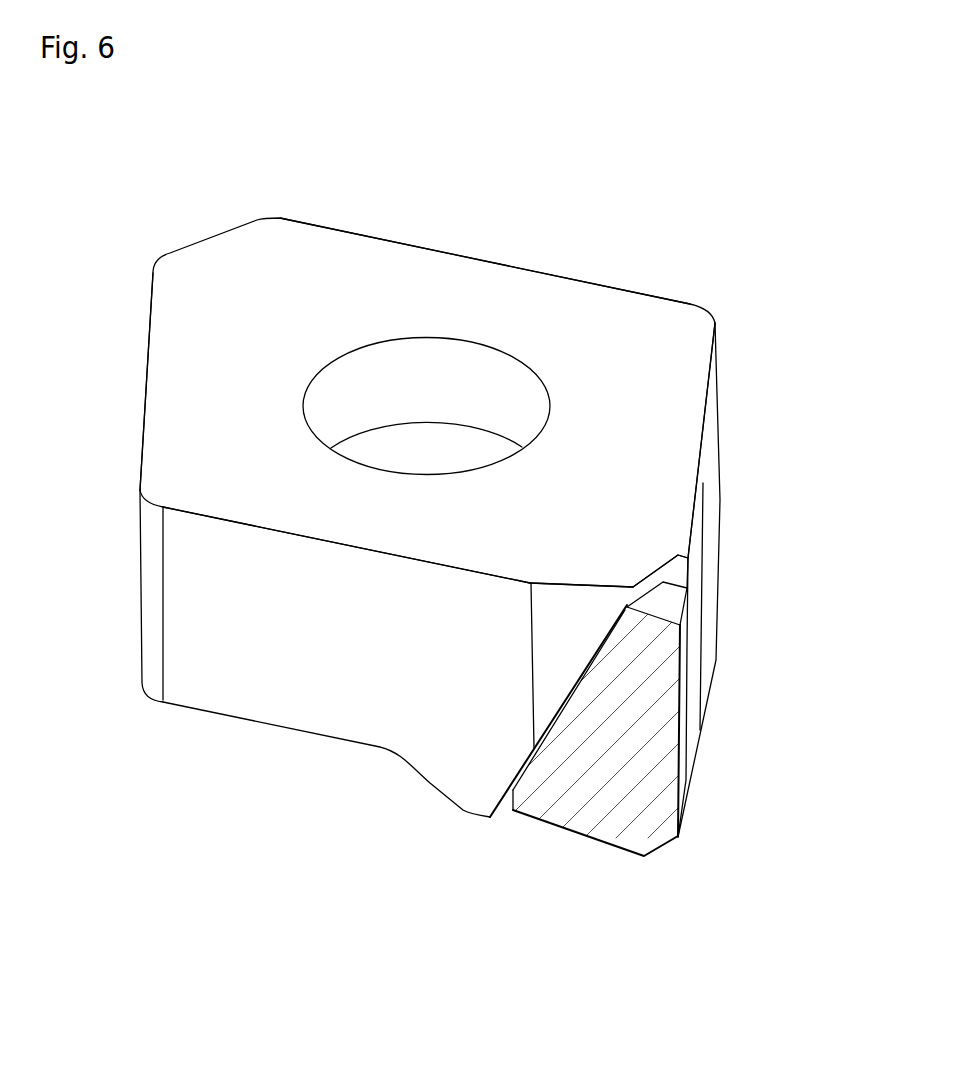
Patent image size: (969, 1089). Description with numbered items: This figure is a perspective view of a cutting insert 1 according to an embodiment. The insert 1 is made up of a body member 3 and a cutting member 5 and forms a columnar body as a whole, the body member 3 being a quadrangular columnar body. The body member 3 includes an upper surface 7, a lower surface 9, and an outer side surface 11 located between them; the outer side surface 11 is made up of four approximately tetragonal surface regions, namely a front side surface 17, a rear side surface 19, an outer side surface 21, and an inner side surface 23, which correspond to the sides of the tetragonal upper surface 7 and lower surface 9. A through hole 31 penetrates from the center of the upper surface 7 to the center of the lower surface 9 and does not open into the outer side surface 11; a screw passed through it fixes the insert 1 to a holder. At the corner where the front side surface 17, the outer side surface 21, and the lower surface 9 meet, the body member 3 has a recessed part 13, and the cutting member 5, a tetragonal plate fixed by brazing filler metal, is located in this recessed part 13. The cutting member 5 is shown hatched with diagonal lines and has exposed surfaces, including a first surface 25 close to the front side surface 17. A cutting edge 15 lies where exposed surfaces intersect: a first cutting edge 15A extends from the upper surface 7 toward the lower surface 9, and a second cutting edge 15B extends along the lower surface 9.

The insert 1 is at (219, 167).
The body member 3 is at (227, 642).
The cutting member 5 is at (628, 798).
The upper surface 7 is at (640, 340).
The lower surface 9 is at (367, 743).
The outer side surface 11 is at (429, 488).
The front side surface 17 is at (300, 690).
The rear side surface 19 is at (527, 270).
The outer side surface 21 is at (702, 567).
The inner side surface 23 is at (143, 413).
The recessed part 13 is at (680, 575).
The cutting edge 15 is at (670, 800).
The first cutting edge 15A is at (680, 733).
The second cutting edge 15B is at (575, 835).
The first surface 25 is at (630, 720).
The through hole 31 is at (358, 382).